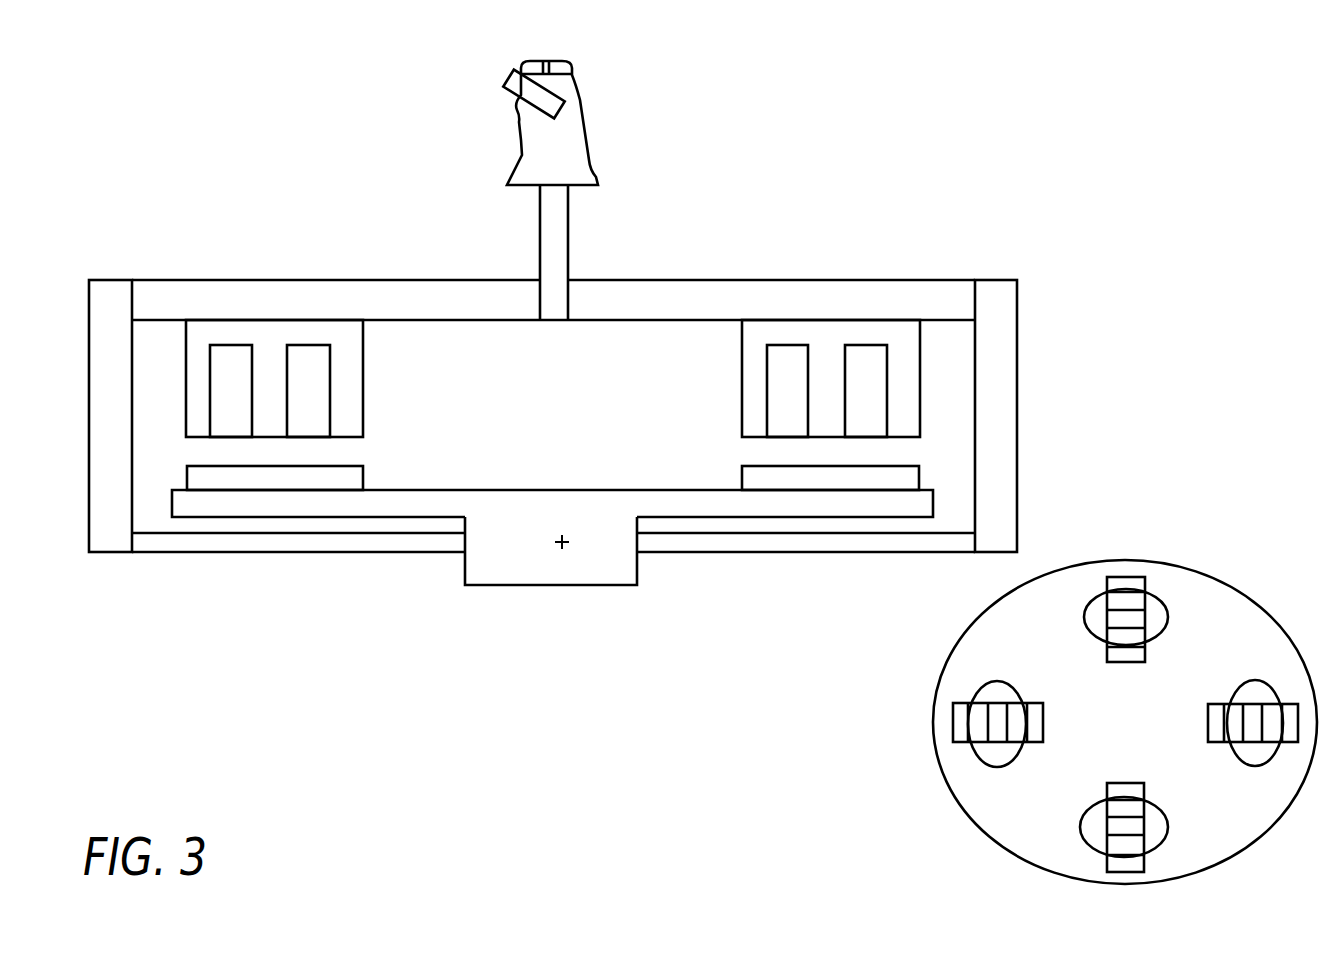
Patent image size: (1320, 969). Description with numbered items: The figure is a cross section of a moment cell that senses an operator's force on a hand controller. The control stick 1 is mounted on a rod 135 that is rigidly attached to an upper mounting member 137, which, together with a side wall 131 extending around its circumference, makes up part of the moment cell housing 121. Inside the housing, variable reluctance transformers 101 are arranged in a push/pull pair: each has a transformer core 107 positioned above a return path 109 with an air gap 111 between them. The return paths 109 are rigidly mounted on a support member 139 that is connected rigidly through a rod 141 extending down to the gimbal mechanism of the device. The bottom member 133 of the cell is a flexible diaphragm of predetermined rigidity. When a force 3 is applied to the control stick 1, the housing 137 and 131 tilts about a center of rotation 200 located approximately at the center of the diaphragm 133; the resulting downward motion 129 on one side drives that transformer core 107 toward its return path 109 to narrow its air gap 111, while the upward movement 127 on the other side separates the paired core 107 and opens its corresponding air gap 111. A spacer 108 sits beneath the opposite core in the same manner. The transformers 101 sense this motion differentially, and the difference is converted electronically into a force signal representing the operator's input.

The control stick 1 is at (575, 78).
The force 3 is at (618, 115).
The variable reluctance transformers 101 is at (373, 385).
The transformer core 107 is at (365, 327).
The spacer 108 is at (740, 475).
The return path 109 is at (363, 473).
The air gap 111 is at (363, 452).
The moment cell housing 121 is at (703, 511).
The upward movement 127 is at (891, 280).
The downward motion 129 is at (204, 278).
The side wall 131 is at (1017, 335).
The bottom member 133 is at (885, 552).
The rod 135 is at (568, 228).
The upper mounting member 137 is at (650, 278).
The substrate support platen 139 is at (917, 505).
The rod 141 is at (615, 568).
The center of rotation 200 is at (557, 545).